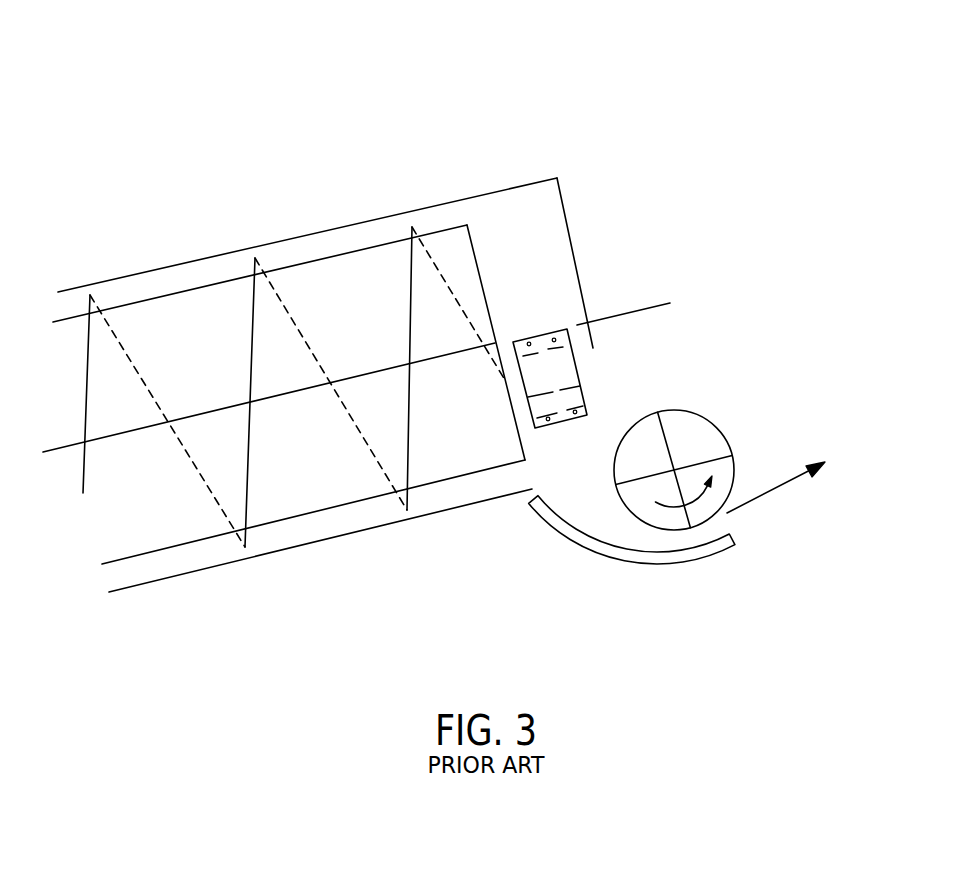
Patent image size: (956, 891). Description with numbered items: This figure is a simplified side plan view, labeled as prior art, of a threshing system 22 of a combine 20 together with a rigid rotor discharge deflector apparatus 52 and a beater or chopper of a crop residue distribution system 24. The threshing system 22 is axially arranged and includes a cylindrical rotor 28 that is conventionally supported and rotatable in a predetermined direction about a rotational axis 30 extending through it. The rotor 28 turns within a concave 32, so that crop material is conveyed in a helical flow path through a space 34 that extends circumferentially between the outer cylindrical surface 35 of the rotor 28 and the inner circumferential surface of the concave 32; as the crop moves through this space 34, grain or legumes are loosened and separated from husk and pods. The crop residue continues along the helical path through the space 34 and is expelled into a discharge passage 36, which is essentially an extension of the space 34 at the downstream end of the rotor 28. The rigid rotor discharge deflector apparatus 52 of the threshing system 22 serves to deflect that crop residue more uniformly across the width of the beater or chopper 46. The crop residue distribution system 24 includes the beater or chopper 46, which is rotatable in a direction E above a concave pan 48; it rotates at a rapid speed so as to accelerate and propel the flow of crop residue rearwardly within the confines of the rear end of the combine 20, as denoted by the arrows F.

The combine 20 is at (695, 135).
The threshing system 22 is at (565, 168).
The crop residue distribution system 24 is at (765, 430).
The cylindrical rotor 28 is at (475, 248).
The rotational axis 30 is at (63, 442).
The concave 32 is at (105, 280).
The space 34 is at (310, 250).
The outer cylindrical surface 35 is at (183, 290).
The discharge passage 36 is at (558, 267).
The beater or chopper 46 is at (688, 411).
The concave pan 48 is at (607, 560).
The rigid rotor discharge deflector apparatus 52 is at (582, 388).
The rotation direction of chopper E is at (667, 502).
The rearward crop residue flow F is at (767, 492).